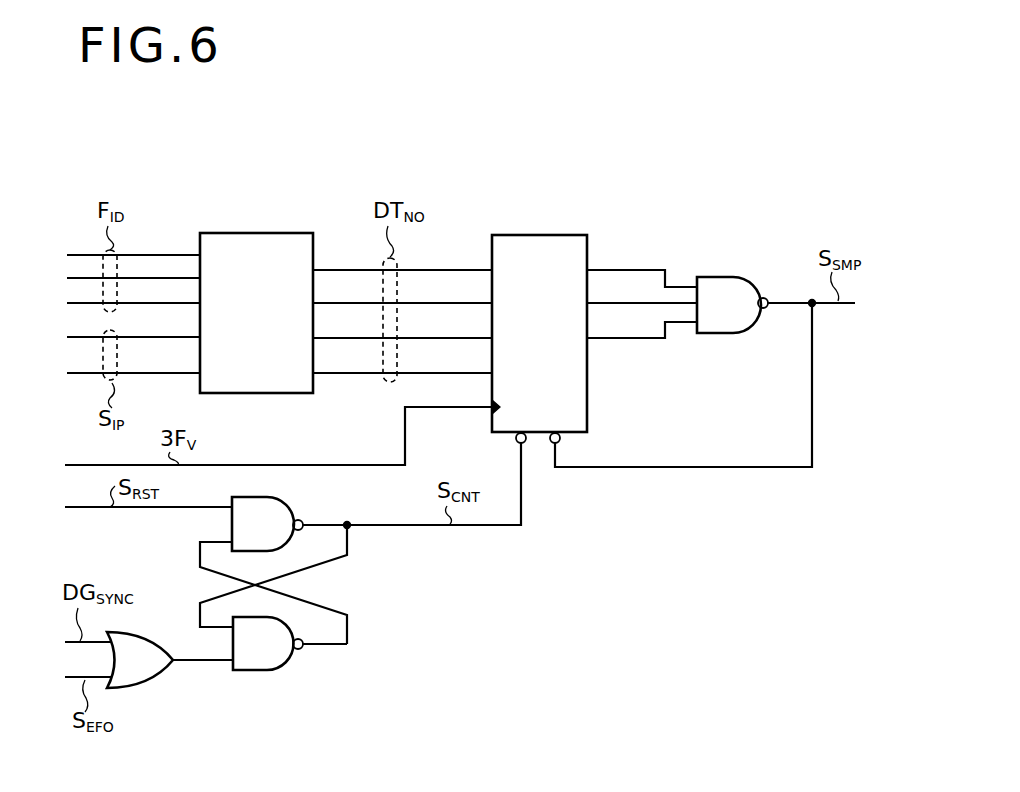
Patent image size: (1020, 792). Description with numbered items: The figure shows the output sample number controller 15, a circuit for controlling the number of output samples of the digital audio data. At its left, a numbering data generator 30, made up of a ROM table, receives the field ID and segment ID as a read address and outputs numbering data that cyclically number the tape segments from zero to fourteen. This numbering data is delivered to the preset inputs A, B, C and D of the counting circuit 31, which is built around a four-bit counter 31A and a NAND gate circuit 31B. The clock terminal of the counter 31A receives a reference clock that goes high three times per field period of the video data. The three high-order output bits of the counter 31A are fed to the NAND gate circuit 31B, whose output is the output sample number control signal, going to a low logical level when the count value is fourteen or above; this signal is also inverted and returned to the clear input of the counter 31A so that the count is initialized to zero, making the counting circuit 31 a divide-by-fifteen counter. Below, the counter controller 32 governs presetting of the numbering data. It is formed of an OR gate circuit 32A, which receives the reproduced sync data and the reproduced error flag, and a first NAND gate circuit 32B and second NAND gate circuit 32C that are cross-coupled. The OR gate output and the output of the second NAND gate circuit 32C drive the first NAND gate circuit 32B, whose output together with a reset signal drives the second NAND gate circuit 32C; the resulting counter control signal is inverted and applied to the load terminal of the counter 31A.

The output sample number controller 15 is at (522, 161).
The numbering data generator 30 is at (258, 394).
The counting circuit 31 is at (645, 250).
The counter 31A is at (587, 400).
The NAND gate circuit 31B is at (733, 334).
The counter controller 32 is at (360, 592).
The OR gate circuit 32A is at (160, 682).
The first NAND gate circuit 32B is at (290, 667).
The second NAND gate circuit 32C is at (284, 500).